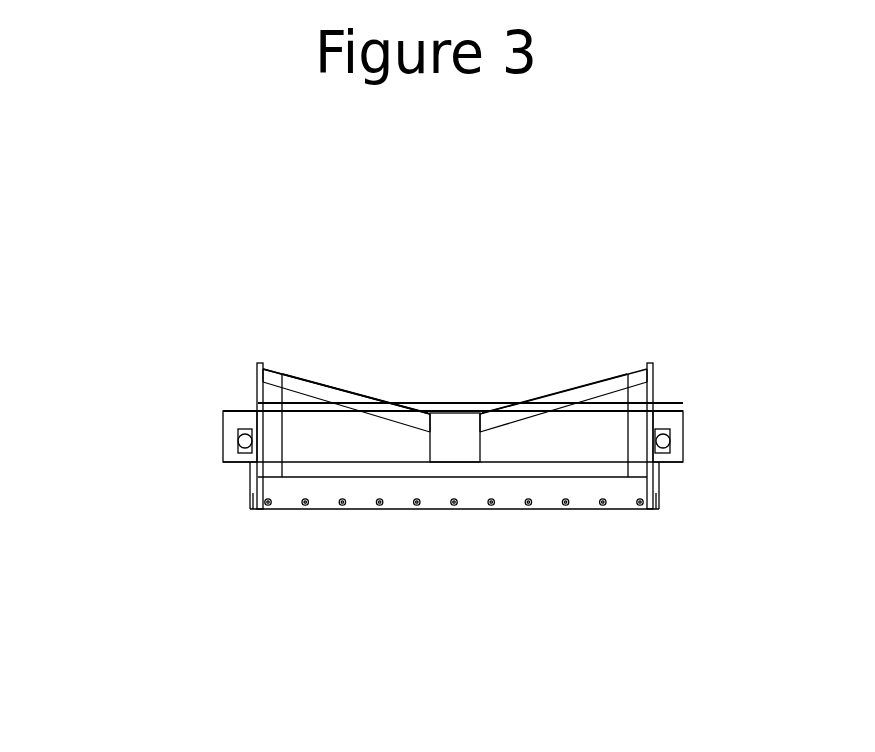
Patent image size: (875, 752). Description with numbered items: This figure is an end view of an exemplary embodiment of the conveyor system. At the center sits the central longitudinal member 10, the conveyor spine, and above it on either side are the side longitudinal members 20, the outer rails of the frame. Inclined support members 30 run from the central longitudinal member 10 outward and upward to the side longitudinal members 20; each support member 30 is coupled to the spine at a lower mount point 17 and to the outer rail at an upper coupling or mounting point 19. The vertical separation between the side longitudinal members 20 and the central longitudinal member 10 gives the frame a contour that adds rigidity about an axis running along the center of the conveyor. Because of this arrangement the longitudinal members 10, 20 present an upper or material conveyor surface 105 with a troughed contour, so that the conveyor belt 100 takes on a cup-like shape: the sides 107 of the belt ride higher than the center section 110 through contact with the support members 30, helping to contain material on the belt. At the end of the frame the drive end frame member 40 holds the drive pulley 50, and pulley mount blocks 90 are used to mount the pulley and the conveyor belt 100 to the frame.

The central longitudinal member 10 is at (450, 433).
The lower mount point 17 is at (430, 432).
The upper coupling or mounting point 19 is at (263, 383).
The side longitudinal member 20 is at (459, 349).
The support member 30 is at (340, 388).
The drive end frame member 40 is at (202, 536).
The drive pulley 50 is at (243, 516).
The pulley mount block 90 is at (699, 540).
The conveyor belt 100 is at (454, 575).
The upper or material conveyor surface 105 is at (353, 392).
The side of the belt 107 is at (653, 392).
The center section of the belt 110 is at (465, 405).